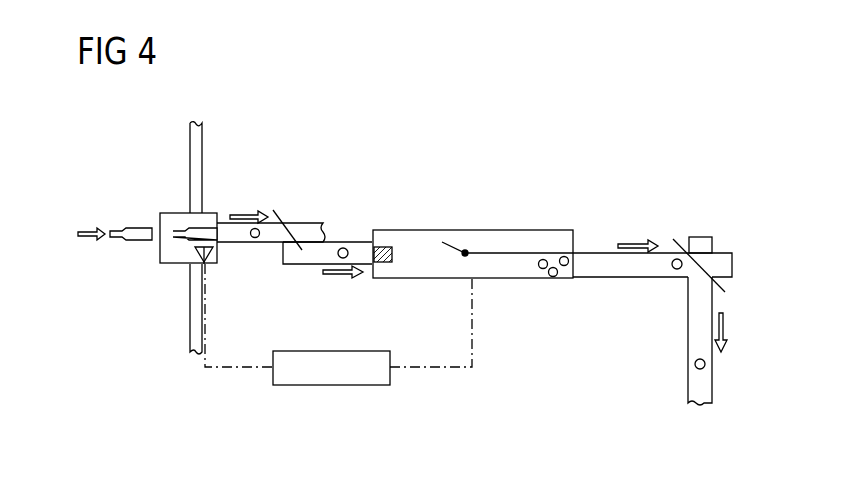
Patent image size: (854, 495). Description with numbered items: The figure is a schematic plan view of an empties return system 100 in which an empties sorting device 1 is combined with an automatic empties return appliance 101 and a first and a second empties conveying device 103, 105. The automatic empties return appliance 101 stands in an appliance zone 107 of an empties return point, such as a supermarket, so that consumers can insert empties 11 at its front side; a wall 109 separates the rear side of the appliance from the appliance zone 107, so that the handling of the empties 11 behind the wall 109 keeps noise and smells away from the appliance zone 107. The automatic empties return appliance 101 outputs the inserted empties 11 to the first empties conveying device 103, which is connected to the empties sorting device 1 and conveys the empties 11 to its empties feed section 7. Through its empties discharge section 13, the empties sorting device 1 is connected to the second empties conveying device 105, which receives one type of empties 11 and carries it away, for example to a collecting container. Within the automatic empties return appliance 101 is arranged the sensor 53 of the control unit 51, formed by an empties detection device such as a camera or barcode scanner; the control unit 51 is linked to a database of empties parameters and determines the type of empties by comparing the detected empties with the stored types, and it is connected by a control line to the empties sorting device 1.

The empties sorting device 1 is at (530, 279).
The empties feed section 7 is at (382, 229).
The empties 11 is at (125, 238).
The empties discharge section 13 is at (572, 215).
The control unit 51 is at (327, 350).
The sensor 53 is at (214, 258).
The empties return system 100 is at (468, 402).
The automatic empties return appliance 101 is at (172, 212).
The first empties conveying device 103 is at (312, 204).
The second empties conveying device 105 is at (736, 214).
The appliance zone 107 is at (110, 180).
The wall 109 is at (203, 141).